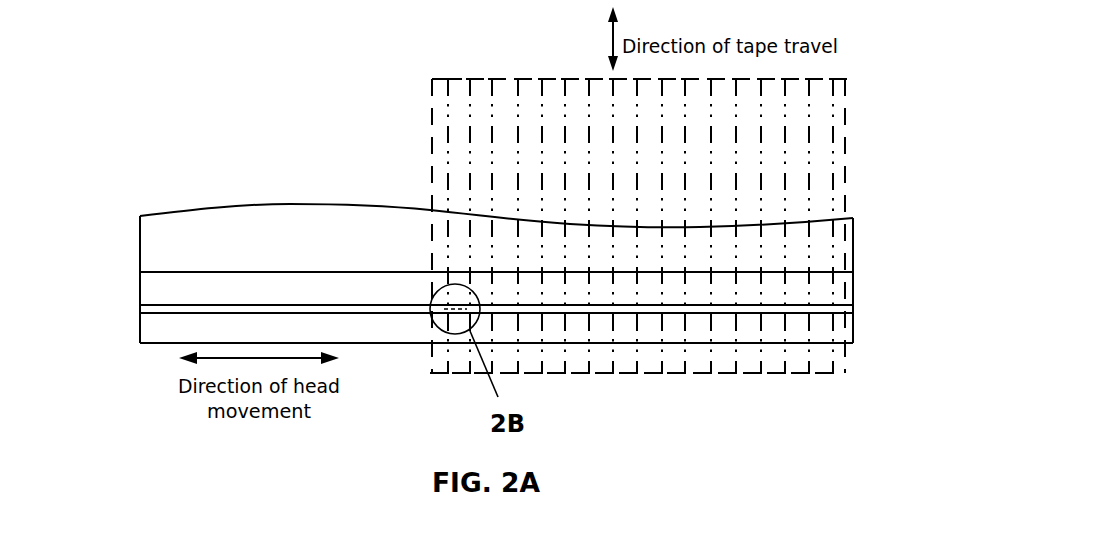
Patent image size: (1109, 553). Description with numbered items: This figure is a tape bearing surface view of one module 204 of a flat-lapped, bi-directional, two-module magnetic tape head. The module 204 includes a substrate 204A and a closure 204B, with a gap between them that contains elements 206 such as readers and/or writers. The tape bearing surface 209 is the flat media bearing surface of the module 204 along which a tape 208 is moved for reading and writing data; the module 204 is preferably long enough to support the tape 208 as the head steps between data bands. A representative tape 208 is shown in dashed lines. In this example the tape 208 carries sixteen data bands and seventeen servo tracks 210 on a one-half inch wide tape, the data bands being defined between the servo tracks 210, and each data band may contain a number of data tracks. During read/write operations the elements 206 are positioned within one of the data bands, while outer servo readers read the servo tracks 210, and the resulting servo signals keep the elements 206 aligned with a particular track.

The module 204 is at (178, 183).
The substrate 204A is at (277, 204).
The closure 204B is at (139, 330).
The elements 206 is at (415, 309).
The tape 208 is at (432, 81).
The tape bearing surface 209 is at (335, 293).
The servo tracks 210 is at (540, 162).